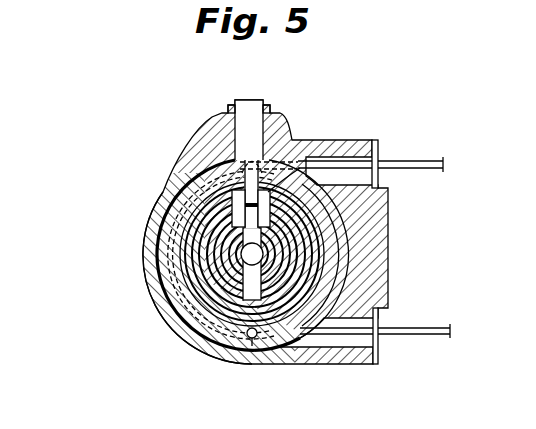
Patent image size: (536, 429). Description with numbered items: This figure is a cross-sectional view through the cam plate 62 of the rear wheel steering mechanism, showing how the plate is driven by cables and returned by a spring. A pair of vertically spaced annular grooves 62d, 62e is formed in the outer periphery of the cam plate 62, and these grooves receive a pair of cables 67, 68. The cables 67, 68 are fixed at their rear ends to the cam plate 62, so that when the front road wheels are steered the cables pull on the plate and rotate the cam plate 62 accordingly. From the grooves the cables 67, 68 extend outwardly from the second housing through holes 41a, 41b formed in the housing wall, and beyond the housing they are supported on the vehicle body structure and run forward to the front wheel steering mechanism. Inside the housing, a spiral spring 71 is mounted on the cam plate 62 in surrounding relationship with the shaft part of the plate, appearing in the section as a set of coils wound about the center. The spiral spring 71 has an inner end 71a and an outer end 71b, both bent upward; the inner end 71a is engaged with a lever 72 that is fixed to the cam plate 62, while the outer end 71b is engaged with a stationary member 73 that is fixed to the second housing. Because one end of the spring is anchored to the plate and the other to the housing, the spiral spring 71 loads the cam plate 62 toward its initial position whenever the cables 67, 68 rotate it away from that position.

The cam plate 62 is at (222, 232).
The annular groove 62d is at (134, 278).
The annular groove 62e is at (150, 252).
The spiral spring 71 is at (197, 289).
The inner end of spiral spring 71a is at (237, 205).
The outer end of spiral spring 71b is at (302, 170).
The lever 72 is at (243, 292).
The stationary member 73 is at (247, 102).
The cable 67 is at (432, 162).
The cable 68 is at (420, 333).
The hole 41a is at (413, 147).
The hole 41b is at (365, 343).